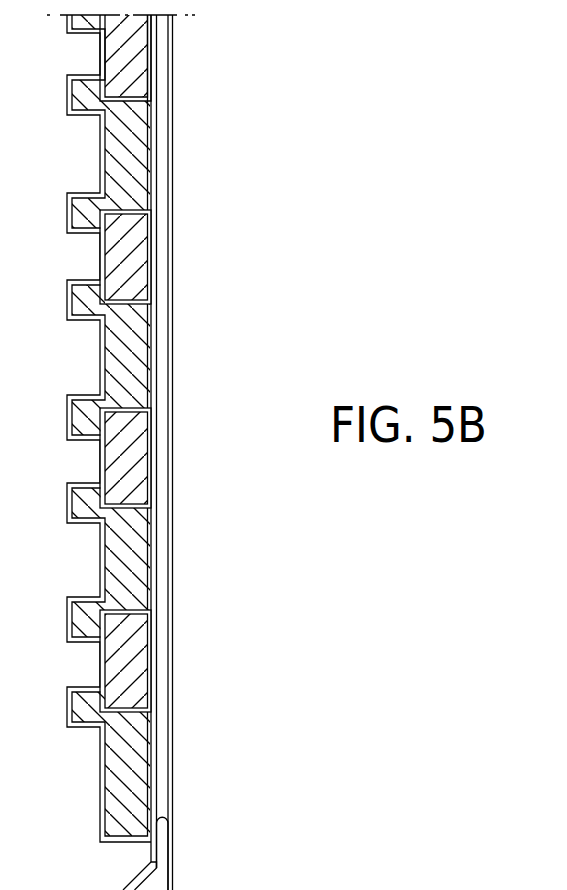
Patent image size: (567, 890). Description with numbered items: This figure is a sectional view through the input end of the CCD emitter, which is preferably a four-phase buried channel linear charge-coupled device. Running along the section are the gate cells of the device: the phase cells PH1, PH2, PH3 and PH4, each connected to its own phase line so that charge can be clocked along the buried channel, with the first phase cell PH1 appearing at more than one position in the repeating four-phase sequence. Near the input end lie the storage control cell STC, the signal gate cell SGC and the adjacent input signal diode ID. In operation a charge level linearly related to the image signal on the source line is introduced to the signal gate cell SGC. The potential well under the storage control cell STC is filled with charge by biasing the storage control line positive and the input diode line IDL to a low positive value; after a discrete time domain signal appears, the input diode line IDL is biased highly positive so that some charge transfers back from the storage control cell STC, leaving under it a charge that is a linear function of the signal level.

The phase cell PH1 is at (140, 159).
The phase cell PH2 is at (142, 454).
The phase cell PH3 is at (141, 357).
The phase cell PH4 is at (141, 264).
The storage control cell STC is at (141, 648).
The signal gate cell SGC is at (141, 772).
The input signal diode ID is at (165, 860).
The input diode line IDL is at (103, 876).